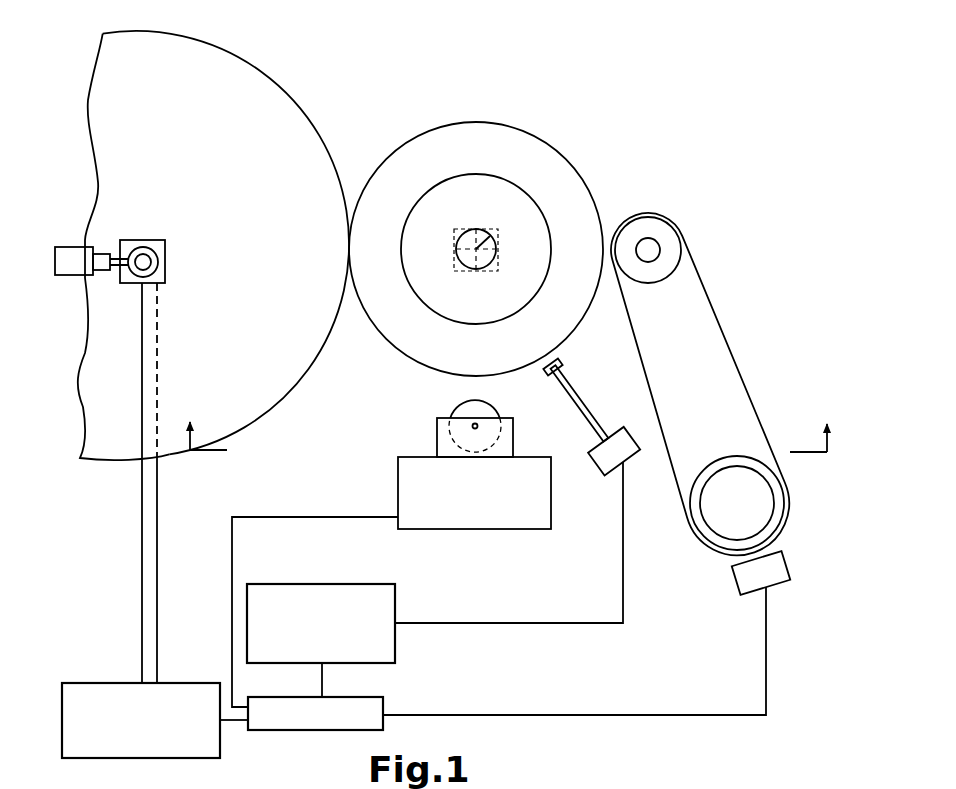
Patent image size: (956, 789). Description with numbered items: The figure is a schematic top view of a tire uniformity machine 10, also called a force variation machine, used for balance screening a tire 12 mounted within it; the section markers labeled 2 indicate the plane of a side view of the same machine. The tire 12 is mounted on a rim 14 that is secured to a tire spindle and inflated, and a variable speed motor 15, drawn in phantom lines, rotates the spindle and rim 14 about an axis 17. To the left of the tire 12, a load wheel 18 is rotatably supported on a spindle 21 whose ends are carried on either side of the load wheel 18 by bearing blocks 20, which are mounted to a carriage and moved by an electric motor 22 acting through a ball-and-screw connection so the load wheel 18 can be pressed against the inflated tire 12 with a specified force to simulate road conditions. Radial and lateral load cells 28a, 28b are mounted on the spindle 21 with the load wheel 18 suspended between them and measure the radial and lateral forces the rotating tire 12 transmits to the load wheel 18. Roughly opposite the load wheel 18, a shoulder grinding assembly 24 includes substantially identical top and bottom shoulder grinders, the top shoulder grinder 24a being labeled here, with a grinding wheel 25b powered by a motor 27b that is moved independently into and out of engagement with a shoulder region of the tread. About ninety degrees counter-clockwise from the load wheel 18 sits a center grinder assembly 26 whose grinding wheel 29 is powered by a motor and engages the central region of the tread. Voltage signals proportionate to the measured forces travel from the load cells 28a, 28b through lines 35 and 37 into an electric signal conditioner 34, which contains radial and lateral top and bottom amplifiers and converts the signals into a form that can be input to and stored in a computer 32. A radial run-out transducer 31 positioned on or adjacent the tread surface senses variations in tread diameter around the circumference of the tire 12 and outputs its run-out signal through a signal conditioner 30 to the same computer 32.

The tire uniformity machine 10 is at (473, 62).
The tire 12 is at (527, 132).
The rim 14 is at (530, 197).
The variable speed motor 15 is at (462, 228).
The axis 17 is at (497, 233).
The load wheel 18 is at (240, 58).
The bearing blocks 20 is at (132, 240).
The spindle 21 is at (143, 262).
The electric motor 22 is at (55, 256).
The shoulder grinding assembly 24 is at (734, 333).
The top shoulder grinder 24a is at (737, 777).
The grinding wheel 25b is at (678, 228).
The center grinder assembly 26 is at (395, 466).
The motor 27b is at (752, 503).
The radial and lateral load cell 28a is at (152, 238).
The radial and lateral load cell 28b is at (167, 248).
The grinding wheel 29 is at (455, 412).
The signal conditioner 30 is at (398, 596).
The radial run-out transducer 31 is at (596, 470).
The computer 32 is at (378, 698).
The electric signal conditioner 34 is at (118, 683).
The line 35 is at (140, 520).
The line 37 is at (158, 570).
The section line 2- 2 is at (509, 422).